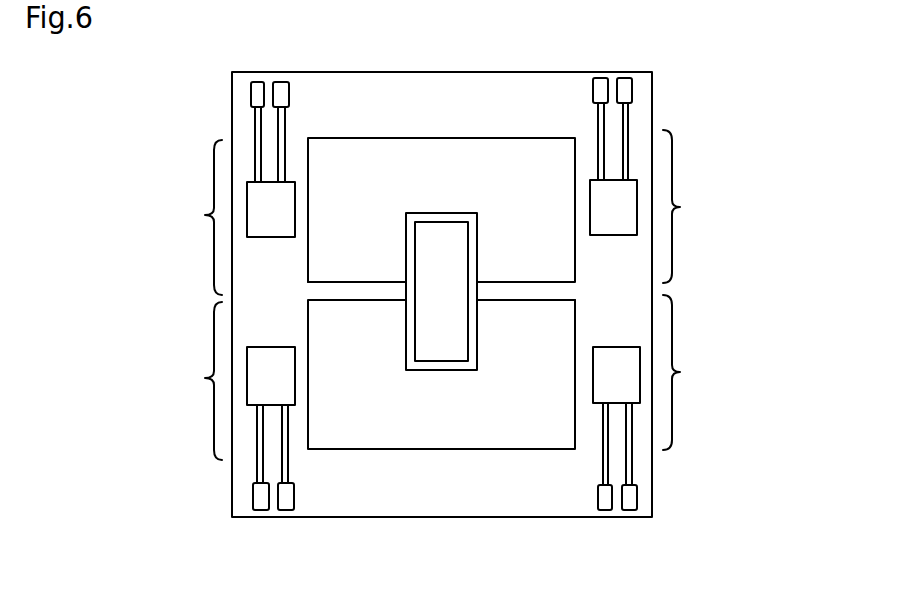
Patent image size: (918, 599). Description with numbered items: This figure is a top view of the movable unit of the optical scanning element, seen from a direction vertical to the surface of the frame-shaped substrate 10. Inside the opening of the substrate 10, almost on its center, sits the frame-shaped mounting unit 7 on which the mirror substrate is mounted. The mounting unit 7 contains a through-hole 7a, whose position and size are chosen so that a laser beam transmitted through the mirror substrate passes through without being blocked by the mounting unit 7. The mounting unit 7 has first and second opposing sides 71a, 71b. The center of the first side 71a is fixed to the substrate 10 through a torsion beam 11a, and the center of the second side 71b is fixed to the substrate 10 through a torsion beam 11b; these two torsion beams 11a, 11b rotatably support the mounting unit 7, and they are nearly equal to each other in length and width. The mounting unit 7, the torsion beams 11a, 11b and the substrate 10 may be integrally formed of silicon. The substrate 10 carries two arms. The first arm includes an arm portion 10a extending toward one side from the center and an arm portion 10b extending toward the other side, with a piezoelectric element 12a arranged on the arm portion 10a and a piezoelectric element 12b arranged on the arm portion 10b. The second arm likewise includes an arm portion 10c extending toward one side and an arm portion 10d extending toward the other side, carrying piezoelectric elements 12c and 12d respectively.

The substrate 10 is at (643, 73).
The arm portion 10a is at (693, 206).
The arm portion 10b is at (696, 372).
The arm portion 10c is at (191, 217).
The arm portion 10d is at (188, 381).
The piezoelectric element 12a is at (627, 188).
The piezoelectric element 12b is at (630, 353).
The piezoelectric element 12c is at (253, 198).
The piezoelectric element 12d is at (263, 362).
The mounting unit 7 is at (440, 213).
The through-hole 7a is at (462, 337).
The first side 71a is at (483, 250).
The second side 71b is at (407, 250).
The torsion beam 11a is at (535, 292).
The torsion beam 11b is at (362, 298).